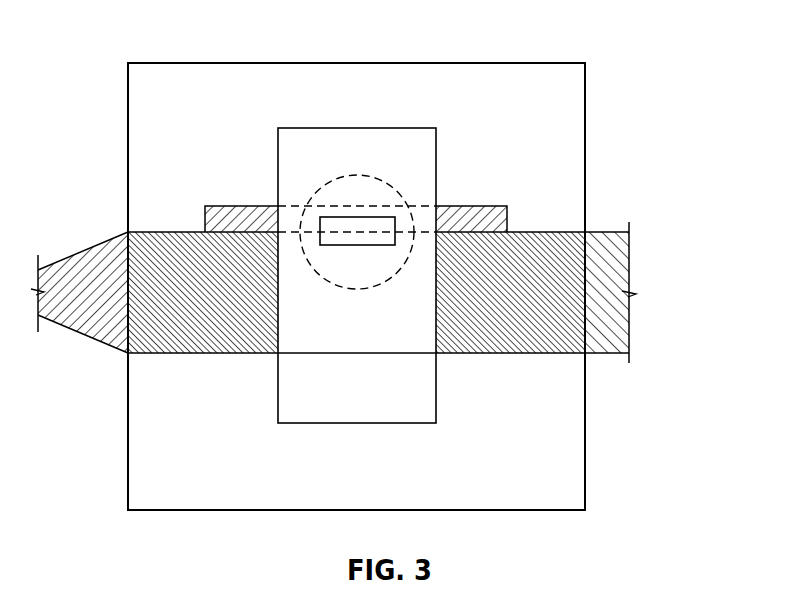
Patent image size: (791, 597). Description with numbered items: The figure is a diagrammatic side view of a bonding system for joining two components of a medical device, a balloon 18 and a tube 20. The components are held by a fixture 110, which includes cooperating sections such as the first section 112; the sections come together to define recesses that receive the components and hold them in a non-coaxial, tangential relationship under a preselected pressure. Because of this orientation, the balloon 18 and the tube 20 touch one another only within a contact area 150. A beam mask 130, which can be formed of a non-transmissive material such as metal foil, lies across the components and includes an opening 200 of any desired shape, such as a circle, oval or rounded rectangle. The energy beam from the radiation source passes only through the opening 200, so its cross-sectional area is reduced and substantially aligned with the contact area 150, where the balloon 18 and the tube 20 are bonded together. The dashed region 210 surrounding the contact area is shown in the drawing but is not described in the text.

The fixture 110 is at (632, 52).
The first section 112 is at (515, 512).
The balloon 18 is at (208, 355).
The tube 20 is at (262, 206).
The beam mask 130 is at (369, 128).
The contact area 150 is at (374, 238).
The opening 200 is at (345, 217).
The analysis region 210 is at (326, 283).